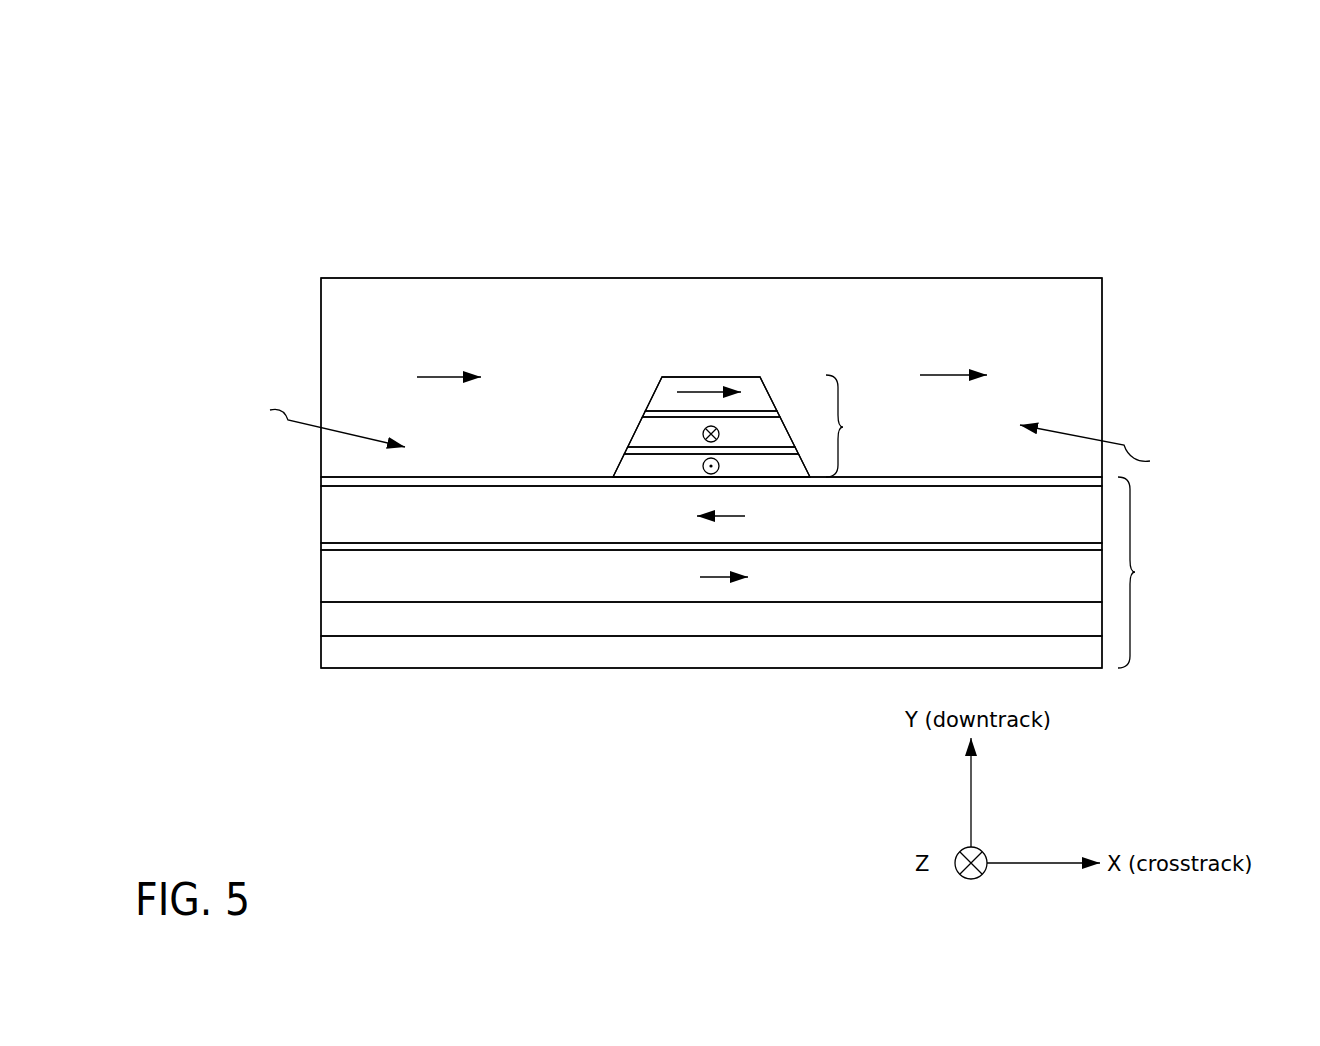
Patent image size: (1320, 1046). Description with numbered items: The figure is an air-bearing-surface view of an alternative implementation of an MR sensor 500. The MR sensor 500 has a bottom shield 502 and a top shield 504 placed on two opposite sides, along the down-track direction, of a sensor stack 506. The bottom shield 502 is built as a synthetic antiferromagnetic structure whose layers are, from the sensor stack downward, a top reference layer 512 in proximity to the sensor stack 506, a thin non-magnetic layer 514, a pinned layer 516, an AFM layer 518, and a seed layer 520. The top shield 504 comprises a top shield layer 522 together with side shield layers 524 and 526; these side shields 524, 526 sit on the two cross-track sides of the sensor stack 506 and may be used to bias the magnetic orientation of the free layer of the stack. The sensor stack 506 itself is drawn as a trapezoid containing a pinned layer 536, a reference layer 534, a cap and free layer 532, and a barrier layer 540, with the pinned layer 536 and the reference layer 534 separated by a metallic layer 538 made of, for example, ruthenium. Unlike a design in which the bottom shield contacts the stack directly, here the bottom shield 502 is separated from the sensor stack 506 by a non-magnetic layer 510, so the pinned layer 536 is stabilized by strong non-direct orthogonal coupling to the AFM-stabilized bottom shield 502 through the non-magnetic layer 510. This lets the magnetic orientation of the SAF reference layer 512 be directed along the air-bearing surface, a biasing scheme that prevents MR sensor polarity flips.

The MR sensor 500 is at (240, 116).
The bottom shield 502 is at (1170, 574).
The top shield 504 is at (321, 362).
The sensor stack 506 is at (850, 425).
The non-magnetic layer 510 is at (321, 478).
The top layer (RL) 512 is at (321, 506).
The thin non-magnetic layer 514 is at (321, 548).
The pinned layer 516 is at (321, 587).
The AFM layer 518 is at (321, 618).
The seed layer 520 is at (321, 652).
The top shield layer 522 is at (678, 310).
The side shield layer 524 is at (317, 424).
The side shield layer 526 is at (1108, 451).
The cap and free layer 532 is at (654, 395).
The reference layer 534 is at (637, 434).
The pinned layer 536 is at (620, 466).
The metallic layer 538 is at (729, 459).
The barrier layer 540 is at (650, 414).